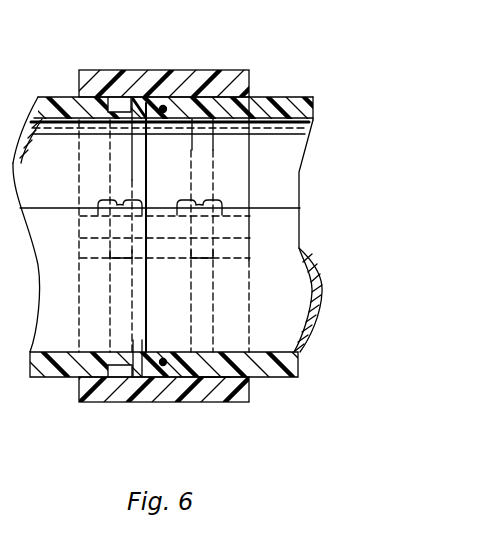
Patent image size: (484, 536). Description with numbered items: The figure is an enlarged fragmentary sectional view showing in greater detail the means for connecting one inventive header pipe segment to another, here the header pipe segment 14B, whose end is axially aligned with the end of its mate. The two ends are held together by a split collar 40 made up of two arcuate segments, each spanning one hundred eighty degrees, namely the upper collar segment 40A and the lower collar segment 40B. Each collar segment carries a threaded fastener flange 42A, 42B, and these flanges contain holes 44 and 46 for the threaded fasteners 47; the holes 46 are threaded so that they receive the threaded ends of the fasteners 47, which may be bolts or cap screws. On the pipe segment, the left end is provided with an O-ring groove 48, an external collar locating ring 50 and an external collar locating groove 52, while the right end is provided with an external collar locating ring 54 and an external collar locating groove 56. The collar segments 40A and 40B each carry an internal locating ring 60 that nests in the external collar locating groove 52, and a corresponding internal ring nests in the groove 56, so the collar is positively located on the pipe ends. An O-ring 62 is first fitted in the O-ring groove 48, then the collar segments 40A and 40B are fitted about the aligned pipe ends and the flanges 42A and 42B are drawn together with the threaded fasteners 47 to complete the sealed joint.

The header pipe segment 14B is at (300, 97).
The split collar 40 is at (206, 68).
The arcuate collar segment 40A is at (112, 110).
The arcuate collar segment 40B is at (130, 376).
The threaded fastener flange 42A is at (232, 213).
The threaded fastener flange 42B is at (222, 258).
The hole 44 is at (117, 226).
The threaded hole 46 is at (110, 240).
The threaded fastener 47 is at (187, 201).
The O-ring groove 48 is at (163, 361).
The external collar locating ring 50 is at (195, 100).
The external collar locating groove 52 is at (212, 375).
The external collar locating ring 54 is at (168, 372).
The external collar locating groove 56 is at (120, 363).
The internal locating ring 60 is at (243, 96).
The O-ring 62 is at (163, 108).